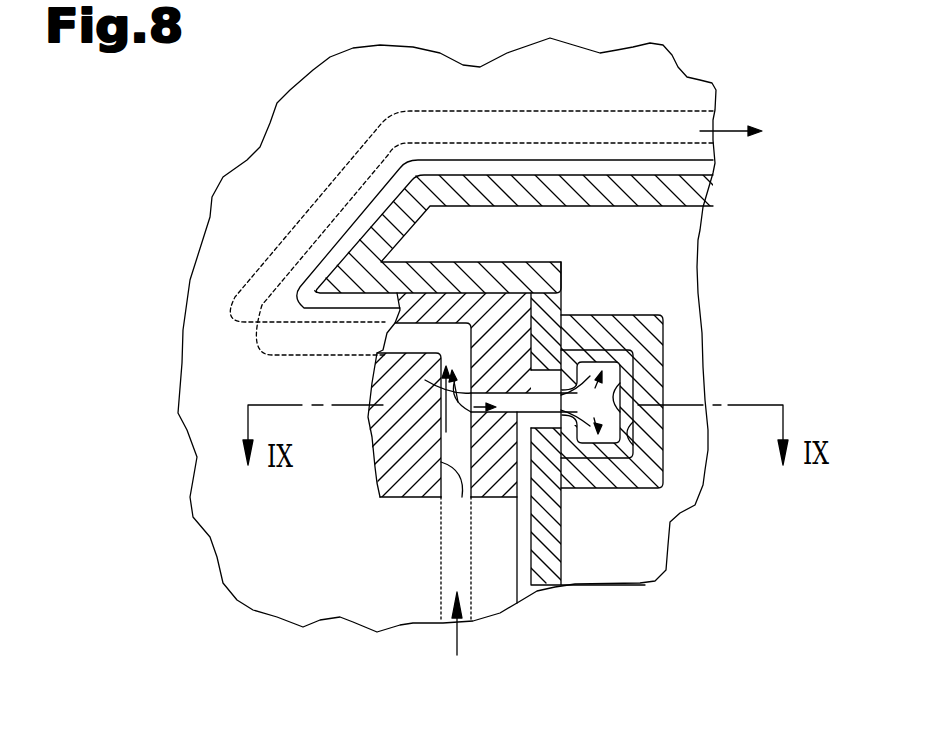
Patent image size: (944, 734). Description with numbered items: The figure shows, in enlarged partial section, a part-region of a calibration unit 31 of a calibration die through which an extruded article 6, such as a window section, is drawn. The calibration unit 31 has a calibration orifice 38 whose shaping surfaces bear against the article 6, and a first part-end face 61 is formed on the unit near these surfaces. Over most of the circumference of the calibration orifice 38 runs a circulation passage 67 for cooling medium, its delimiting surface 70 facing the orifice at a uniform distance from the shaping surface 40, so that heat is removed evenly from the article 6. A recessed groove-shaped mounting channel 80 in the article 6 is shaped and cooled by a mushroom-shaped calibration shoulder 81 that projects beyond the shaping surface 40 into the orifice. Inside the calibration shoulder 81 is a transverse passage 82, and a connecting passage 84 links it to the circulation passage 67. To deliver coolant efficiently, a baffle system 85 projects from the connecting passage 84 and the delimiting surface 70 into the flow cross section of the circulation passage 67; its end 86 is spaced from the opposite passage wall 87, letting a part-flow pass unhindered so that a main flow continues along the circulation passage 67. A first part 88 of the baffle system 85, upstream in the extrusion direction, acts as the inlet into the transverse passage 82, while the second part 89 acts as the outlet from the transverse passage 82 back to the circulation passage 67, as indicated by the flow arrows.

The article 6 is at (693, 202).
The calibration unit 31 is at (213, 452).
The calibration orifice 38 is at (678, 267).
The shaping surface 40 is at (540, 583).
The first part-end face 61 is at (694, 172).
The circulation passage 67 is at (518, 600).
The delimiting surface 70 is at (465, 547).
The mounting channel 80 is at (637, 450).
The calibration shoulder 81 is at (640, 350).
The transverse passage 82 is at (620, 383).
The connecting passage 84 is at (566, 410).
The baffle system 85 is at (428, 393).
The end of the baffle system 86 is at (440, 410).
The passage wall 87 is at (455, 460).
The first part of the baffle system 88 is at (468, 440).
The second part of the baffle system 89 is at (537, 360).